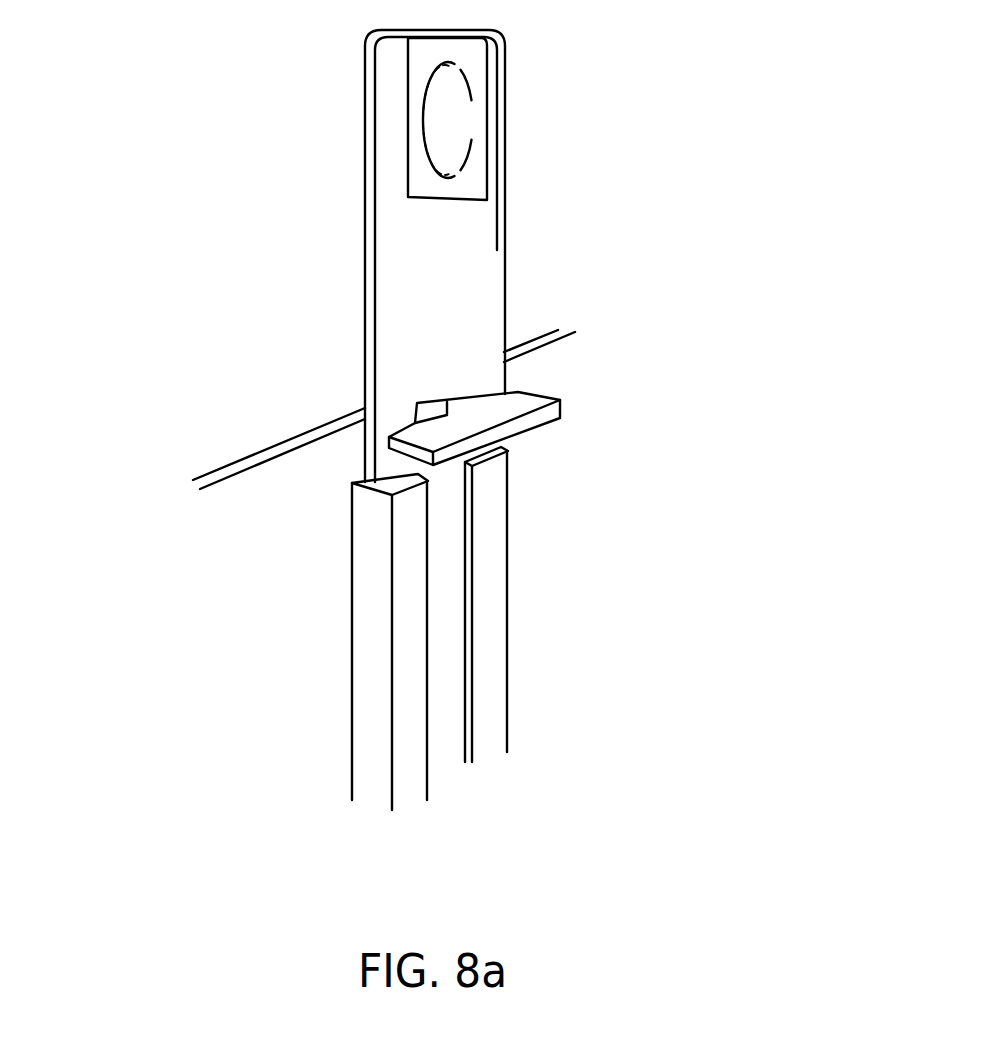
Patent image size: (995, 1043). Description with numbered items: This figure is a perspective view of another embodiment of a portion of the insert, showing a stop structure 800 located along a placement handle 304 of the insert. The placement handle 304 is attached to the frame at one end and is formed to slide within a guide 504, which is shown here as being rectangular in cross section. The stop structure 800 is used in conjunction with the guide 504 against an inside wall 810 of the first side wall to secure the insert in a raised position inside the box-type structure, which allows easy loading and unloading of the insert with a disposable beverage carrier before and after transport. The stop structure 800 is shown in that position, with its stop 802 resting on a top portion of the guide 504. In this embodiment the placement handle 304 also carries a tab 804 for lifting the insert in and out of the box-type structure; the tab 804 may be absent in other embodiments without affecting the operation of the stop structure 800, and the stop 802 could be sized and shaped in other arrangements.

The stop structure 800 is at (248, 222).
The tab 804 is at (465, 125).
The stop 802 is at (542, 417).
The inside wall 810 is at (400, 628).
The placement handle 304 is at (400, 628).
The guide 504 is at (365, 780).